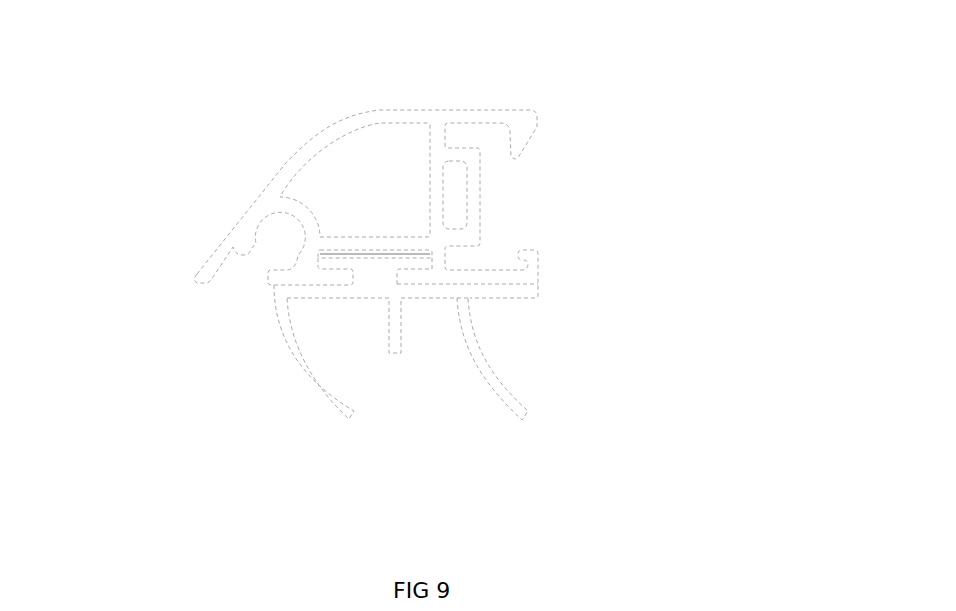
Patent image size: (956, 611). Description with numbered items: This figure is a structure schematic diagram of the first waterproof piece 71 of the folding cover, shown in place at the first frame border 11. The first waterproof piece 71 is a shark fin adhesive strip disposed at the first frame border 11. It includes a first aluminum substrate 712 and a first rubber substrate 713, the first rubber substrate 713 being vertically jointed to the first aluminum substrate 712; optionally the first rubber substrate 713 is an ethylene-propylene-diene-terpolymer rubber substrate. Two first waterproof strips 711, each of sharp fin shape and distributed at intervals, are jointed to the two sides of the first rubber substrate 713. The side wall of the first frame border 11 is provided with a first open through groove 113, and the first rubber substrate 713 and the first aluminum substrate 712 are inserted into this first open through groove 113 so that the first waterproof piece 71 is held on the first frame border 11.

The first frame border 11 is at (437, 118).
The first open through groove 113 is at (372, 253).
The first waterproof piece 71 is at (413, 281).
The first waterproof strip 711 is at (292, 348).
The first aluminum substrate 712 is at (337, 262).
The first rubber substrate 713 is at (375, 281).